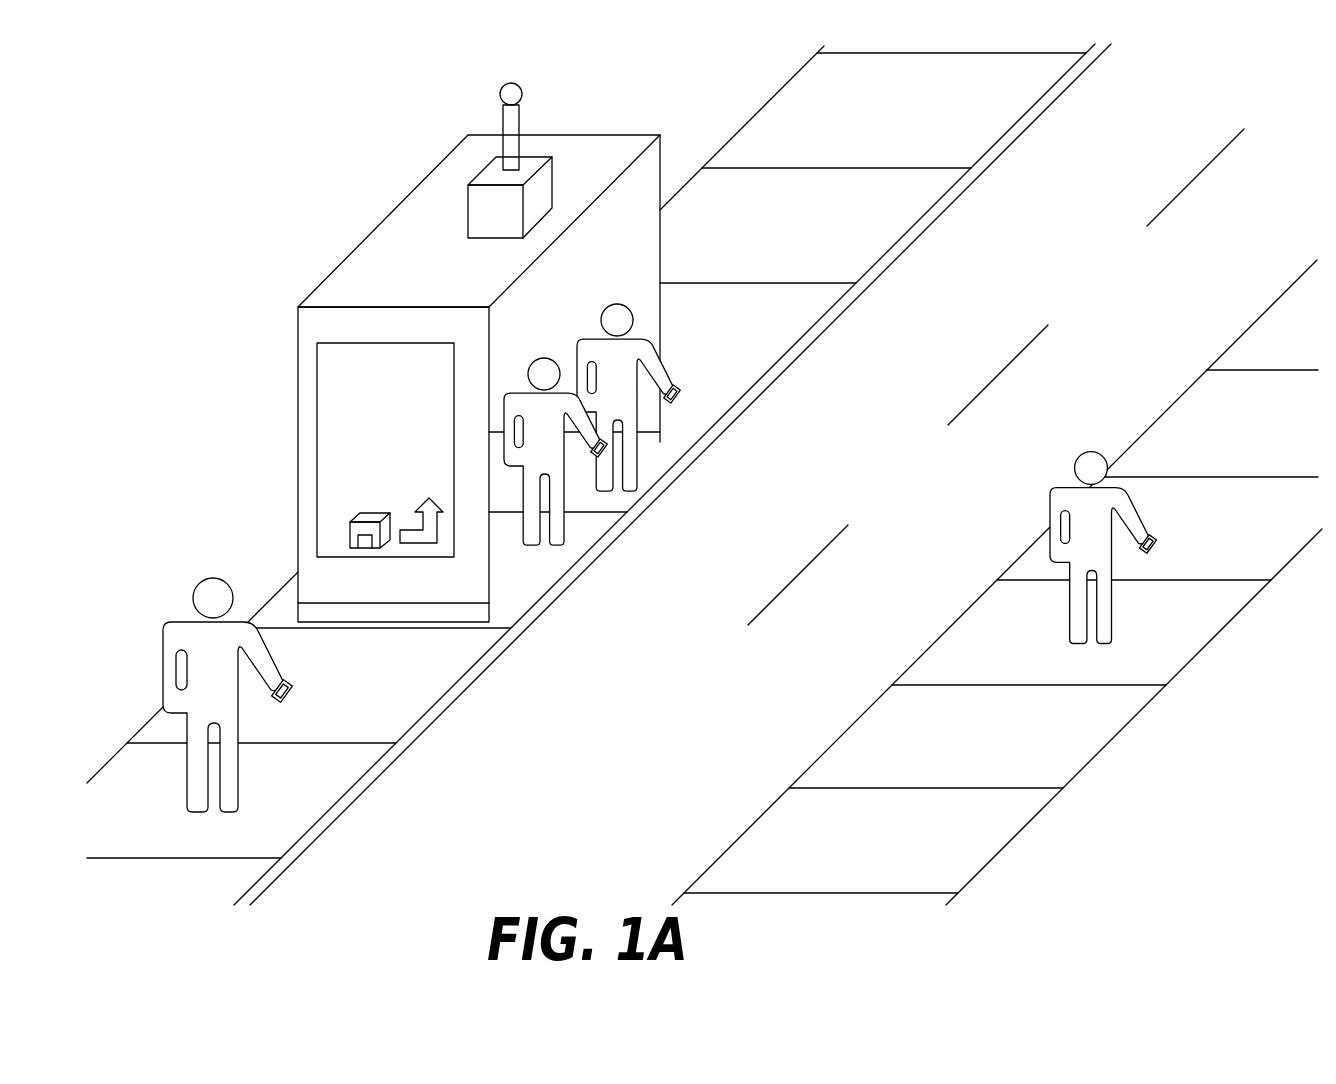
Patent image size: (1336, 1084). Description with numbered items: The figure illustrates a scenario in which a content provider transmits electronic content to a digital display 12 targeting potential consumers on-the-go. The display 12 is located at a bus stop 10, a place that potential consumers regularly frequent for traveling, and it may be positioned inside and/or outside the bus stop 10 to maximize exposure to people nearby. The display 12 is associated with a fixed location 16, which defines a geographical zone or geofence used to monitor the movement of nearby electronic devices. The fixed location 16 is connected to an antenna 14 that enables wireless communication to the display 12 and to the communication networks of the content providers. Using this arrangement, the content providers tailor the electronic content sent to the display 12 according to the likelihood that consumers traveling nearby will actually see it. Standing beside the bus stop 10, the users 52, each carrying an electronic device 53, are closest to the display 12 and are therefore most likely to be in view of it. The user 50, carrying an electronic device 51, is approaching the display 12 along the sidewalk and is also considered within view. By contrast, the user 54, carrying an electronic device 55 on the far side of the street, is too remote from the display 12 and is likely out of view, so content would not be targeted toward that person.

The bus stop 10 is at (444, 352).
The digital display 12 is at (318, 373).
The antenna 14 is at (521, 120).
The fixed location 16 is at (477, 208).
The user 50 is at (181, 566).
The electronic device 51 is at (291, 678).
The user 52 is at (615, 293).
The electronic device 53 is at (680, 388).
The user 54 is at (1088, 444).
The electronic device 55 is at (1156, 532).